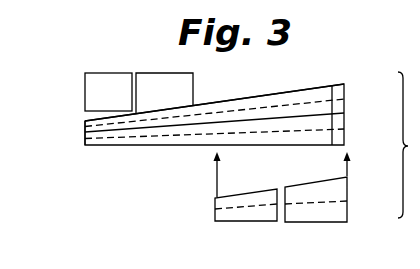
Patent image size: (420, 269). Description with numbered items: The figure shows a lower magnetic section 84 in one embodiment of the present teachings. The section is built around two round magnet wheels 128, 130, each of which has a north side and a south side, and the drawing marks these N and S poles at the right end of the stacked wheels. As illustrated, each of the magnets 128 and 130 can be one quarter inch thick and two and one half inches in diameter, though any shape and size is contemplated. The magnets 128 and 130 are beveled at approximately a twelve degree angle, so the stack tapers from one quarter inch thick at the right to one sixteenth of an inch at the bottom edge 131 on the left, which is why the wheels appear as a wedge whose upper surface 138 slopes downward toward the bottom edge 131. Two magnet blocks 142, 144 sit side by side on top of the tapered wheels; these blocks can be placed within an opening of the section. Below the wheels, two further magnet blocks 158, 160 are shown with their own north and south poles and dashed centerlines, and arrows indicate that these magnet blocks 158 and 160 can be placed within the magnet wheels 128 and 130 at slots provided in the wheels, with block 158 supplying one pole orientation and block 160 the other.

The magnetic assembly 84 is at (78, 58).
The round magnet wheel 128 is at (345, 95).
The round magnet wheel 130 is at (345, 128).
The bottom edge 131 is at (85, 140).
The tapered magnet 138 is at (242, 98).
The magnet block 142 is at (164, 93).
The magnet block 144 is at (108, 92).
The magnet block 158 is at (325, 180).
The magnet block 160 is at (240, 190).